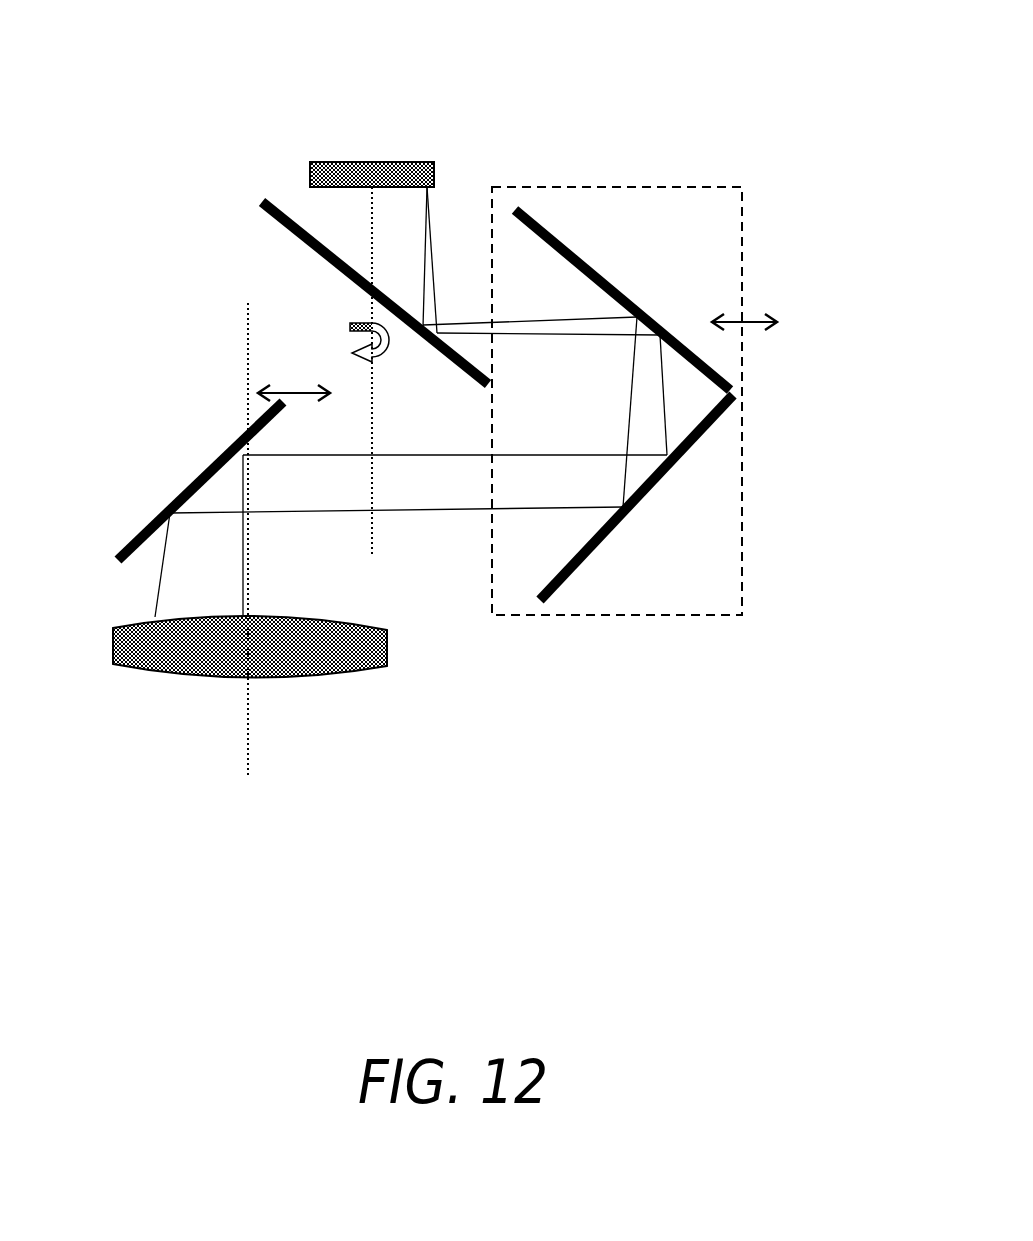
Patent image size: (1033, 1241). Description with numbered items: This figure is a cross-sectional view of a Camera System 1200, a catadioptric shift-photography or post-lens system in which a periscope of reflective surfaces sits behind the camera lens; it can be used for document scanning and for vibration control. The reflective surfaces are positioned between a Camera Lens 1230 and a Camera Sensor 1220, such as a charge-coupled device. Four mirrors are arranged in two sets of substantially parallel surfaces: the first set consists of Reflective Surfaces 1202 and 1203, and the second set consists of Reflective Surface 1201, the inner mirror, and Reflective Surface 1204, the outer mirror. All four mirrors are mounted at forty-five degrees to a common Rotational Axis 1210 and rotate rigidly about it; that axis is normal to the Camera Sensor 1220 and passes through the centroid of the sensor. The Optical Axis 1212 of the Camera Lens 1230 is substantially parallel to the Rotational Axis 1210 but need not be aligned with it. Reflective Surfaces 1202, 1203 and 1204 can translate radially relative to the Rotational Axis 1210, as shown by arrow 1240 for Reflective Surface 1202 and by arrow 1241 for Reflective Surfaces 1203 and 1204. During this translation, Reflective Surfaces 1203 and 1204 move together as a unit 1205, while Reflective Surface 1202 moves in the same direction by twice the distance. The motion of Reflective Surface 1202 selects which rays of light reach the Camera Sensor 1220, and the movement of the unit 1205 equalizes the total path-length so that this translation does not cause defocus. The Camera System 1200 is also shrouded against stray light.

The camera system 1200 is at (732, 70).
The reflective surface 1201 is at (275, 218).
The reflective surface 1202 is at (143, 523).
The reflective surface 1203 is at (637, 503).
The reflective surface 1204 is at (560, 237).
The unit 1205 is at (741, 213).
The rotational axis 1210 is at (370, 238).
The optical axis 1212 is at (249, 763).
The camera sensor 1220 is at (325, 161).
The camera lens 1230 is at (375, 675).
The arrow 1240 is at (292, 392).
The arrow 1241 is at (750, 317).